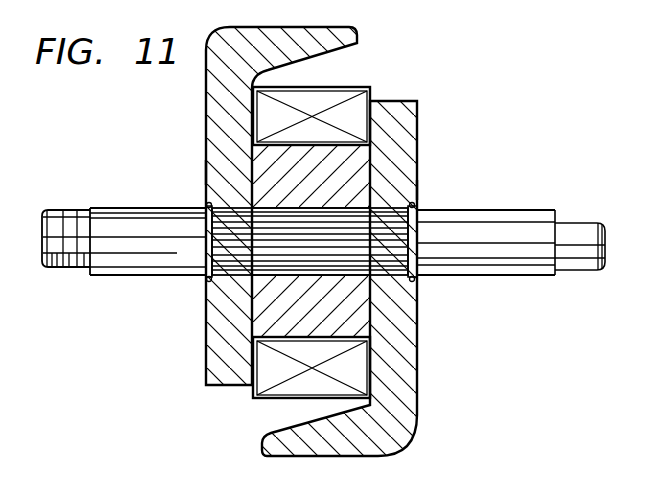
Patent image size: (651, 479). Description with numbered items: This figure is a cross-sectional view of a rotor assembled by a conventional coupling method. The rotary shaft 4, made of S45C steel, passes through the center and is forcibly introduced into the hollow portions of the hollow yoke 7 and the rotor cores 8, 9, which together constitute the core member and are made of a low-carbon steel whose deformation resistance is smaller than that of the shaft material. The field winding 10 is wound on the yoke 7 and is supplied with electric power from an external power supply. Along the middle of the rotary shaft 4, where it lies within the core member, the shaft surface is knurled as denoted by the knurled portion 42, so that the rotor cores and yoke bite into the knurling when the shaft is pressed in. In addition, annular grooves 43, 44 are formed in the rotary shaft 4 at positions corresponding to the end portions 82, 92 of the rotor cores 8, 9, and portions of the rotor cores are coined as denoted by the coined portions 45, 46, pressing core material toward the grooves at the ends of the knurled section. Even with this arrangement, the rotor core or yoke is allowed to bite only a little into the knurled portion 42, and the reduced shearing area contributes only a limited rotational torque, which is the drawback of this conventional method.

The rotary shaft 4 is at (513, 217).
The hollow yoke 7 is at (362, 164).
The rotor core 8 is at (216, 133).
The rotor core 9 is at (400, 172).
The field winding 10 is at (355, 375).
The knurled portion 42 is at (388, 270).
The annular groove 43 is at (204, 247).
The annular groove 44 is at (400, 257).
The coined portion 45 is at (204, 279).
The coined portion 46 is at (418, 283).
The end portion 82 is at (206, 172).
The end portion 92 is at (418, 190).